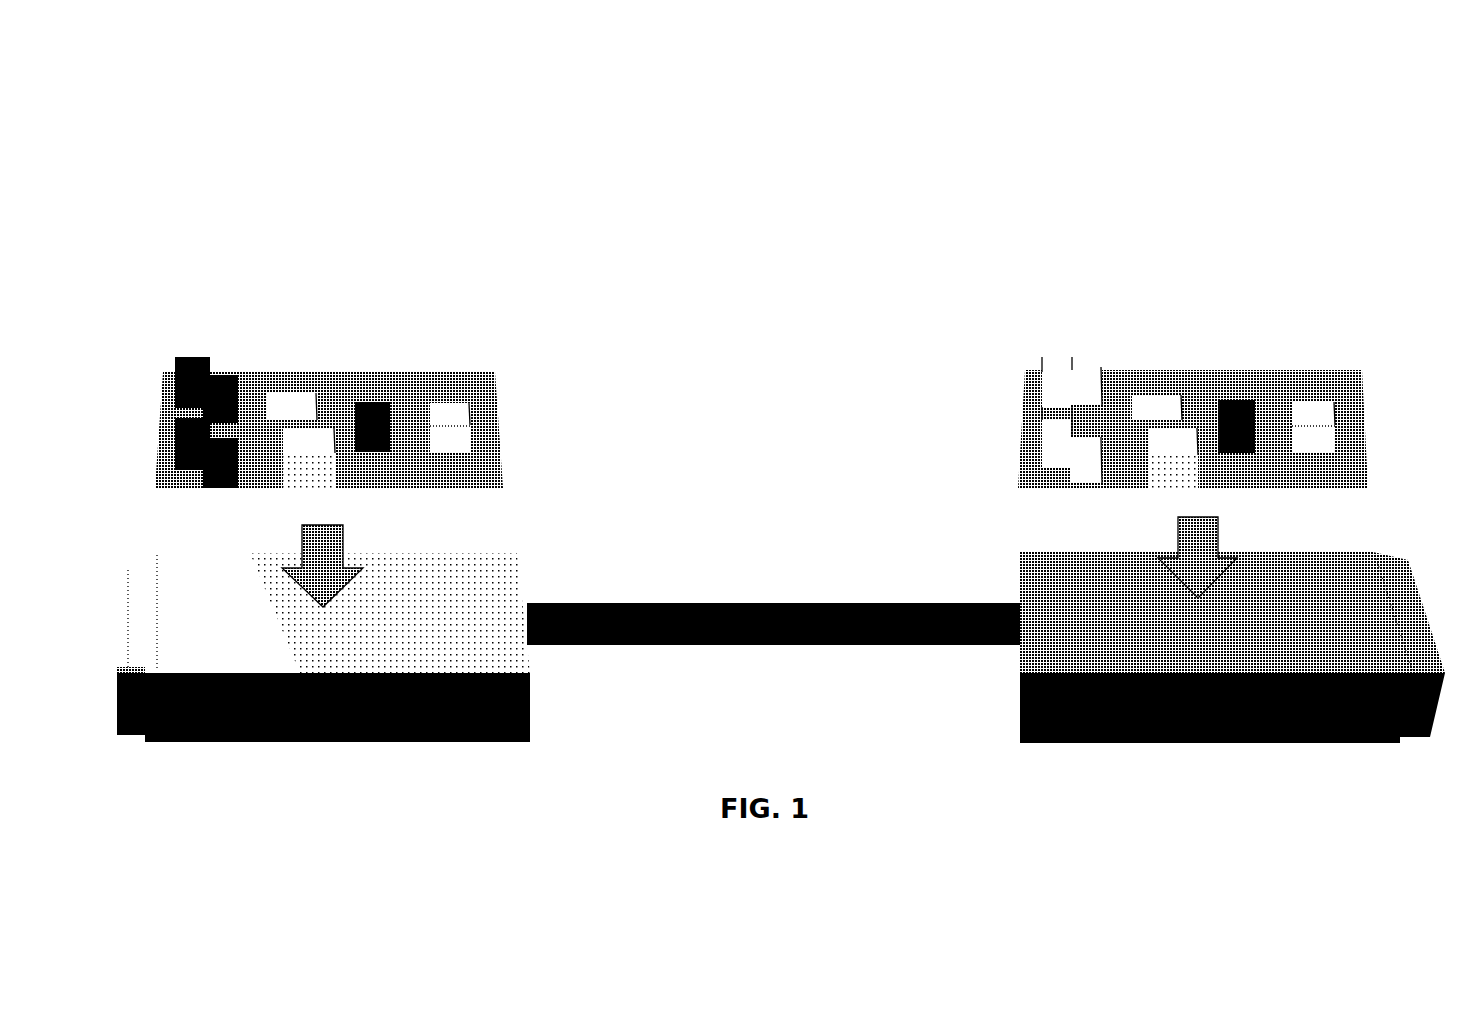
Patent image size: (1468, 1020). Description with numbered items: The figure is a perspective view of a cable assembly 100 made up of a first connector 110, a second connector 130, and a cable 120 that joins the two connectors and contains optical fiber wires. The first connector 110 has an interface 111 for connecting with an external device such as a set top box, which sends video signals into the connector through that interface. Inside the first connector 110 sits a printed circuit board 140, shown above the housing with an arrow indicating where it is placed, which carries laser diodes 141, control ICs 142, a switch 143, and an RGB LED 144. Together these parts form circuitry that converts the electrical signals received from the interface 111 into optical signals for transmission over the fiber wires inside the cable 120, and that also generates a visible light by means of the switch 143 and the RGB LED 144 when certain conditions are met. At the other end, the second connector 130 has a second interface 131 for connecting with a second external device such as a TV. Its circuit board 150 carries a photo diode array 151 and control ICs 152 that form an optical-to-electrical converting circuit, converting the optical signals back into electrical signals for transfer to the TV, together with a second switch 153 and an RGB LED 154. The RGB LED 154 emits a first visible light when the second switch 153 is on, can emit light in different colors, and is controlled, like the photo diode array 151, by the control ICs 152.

The cable assembly 100 is at (1343, 82).
The first connector 110 is at (330, 776).
The interface 111 is at (122, 640).
The cable 120 is at (748, 594).
The second connector 130 is at (1227, 783).
The second interface 131 is at (1453, 617).
The printed circuit board 140 is at (484, 517).
The laser diodes 141 is at (213, 219).
The control IC(s) 142 is at (313, 261).
The switch 143 is at (396, 325).
The RGB LED 144 is at (478, 287).
The printed circuit board 150 is at (1364, 517).
The photo diode array 151 is at (1066, 219).
The control IC(s) 152 is at (1156, 254).
The second switch 153 is at (1248, 315).
The RGB LED 154 is at (1326, 284).